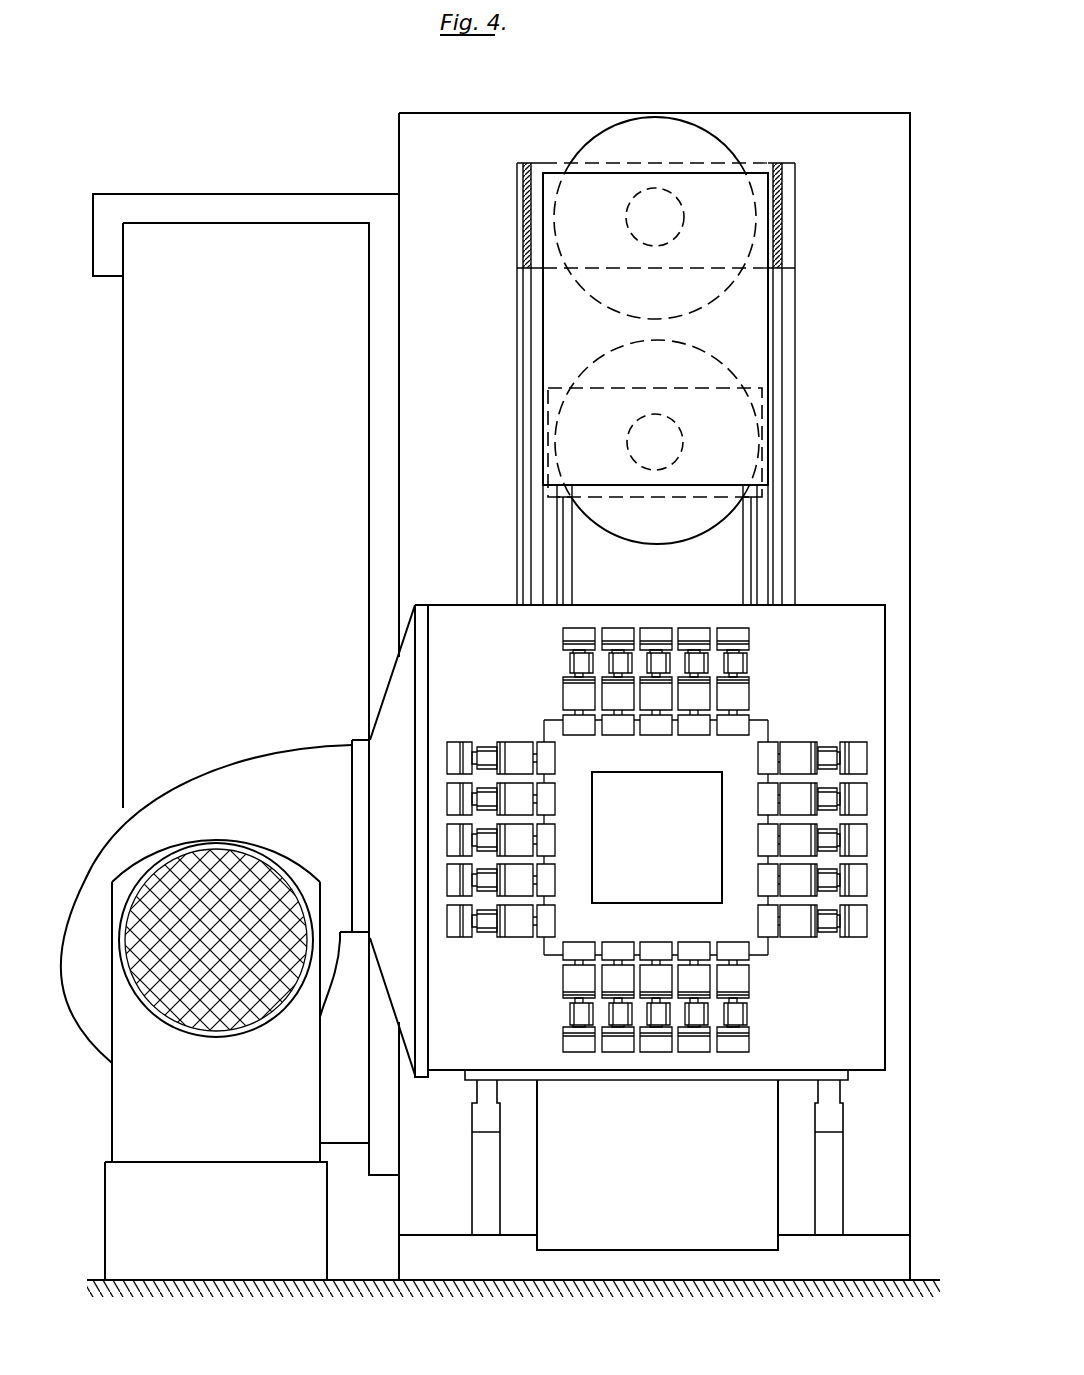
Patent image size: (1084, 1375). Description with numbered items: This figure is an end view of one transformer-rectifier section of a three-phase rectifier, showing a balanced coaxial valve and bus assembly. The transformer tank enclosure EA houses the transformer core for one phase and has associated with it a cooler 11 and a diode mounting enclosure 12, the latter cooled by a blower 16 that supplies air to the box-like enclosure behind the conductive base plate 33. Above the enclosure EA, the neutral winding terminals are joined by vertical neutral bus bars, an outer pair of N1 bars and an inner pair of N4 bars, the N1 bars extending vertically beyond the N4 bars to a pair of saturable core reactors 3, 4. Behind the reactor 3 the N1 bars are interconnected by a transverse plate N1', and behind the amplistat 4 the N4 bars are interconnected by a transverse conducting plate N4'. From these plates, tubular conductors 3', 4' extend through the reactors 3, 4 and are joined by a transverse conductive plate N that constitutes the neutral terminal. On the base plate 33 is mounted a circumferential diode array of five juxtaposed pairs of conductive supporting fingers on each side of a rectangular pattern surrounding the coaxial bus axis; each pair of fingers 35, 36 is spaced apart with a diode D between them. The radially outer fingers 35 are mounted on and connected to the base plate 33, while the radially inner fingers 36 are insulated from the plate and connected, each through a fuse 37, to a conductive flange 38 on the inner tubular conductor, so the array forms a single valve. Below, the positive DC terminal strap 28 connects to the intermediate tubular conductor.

The transformer tank enclosure EA is at (413, 152).
The cooler 11 is at (137, 483).
The blower 16 is at (240, 768).
The diode mounting enclosure 12 is at (835, 603).
The conductive base plate 33 is at (850, 1043).
The positive DC terminal strap 28 is at (670, 1232).
The neutral bus bars N1 is at (658, 384).
The transverse plate N1' is at (641, 144).
The transverse conductive plate N is at (755, 308).
The saturable core reactor 3 is at (660, 218).
The tubular conductor 3' is at (679, 217).
The saturable core reactor 4 is at (657, 461).
The tubular conductor 4' is at (679, 442).
The neutral bus bars N4 is at (657, 545).
The transverse conducting plate N4' is at (655, 425).
The radially outer fingers 35 is at (577, 641).
The radially inner fingers 36 is at (577, 687).
The fuse 37 is at (762, 792).
The conductive flange 38 is at (683, 910).
The diode D is at (742, 665).